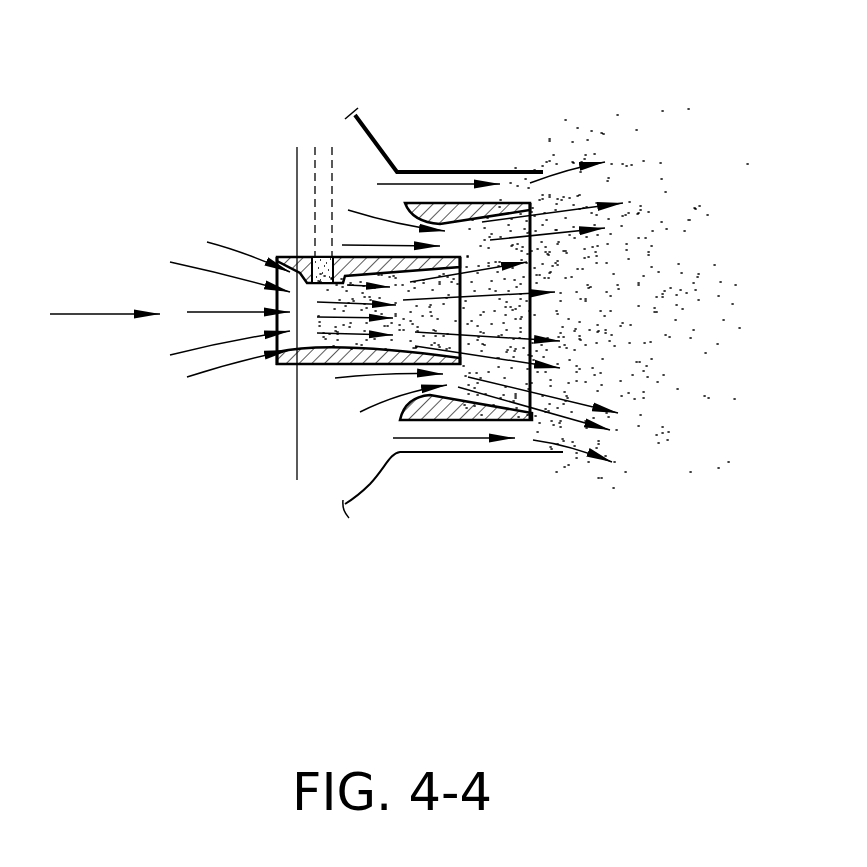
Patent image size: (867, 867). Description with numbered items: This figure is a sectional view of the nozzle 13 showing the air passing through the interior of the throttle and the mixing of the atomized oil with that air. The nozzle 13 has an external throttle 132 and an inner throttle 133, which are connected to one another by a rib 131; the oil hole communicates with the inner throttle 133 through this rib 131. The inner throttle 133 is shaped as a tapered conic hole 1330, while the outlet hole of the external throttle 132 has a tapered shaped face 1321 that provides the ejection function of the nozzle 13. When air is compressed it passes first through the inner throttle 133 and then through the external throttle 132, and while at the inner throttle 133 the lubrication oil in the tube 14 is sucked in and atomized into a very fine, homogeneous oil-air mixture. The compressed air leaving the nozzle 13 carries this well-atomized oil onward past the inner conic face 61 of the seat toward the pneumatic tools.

The nozzle 13 is at (499, 128).
The tube 14 is at (307, 190).
The inner conic face 61 is at (541, 198).
The rib 131 is at (312, 407).
The external throttle 132 is at (505, 207).
The inner throttle 133 is at (370, 262).
The tapered shaped face 1321 is at (460, 377).
The tapered conic hole 1330 is at (278, 364).